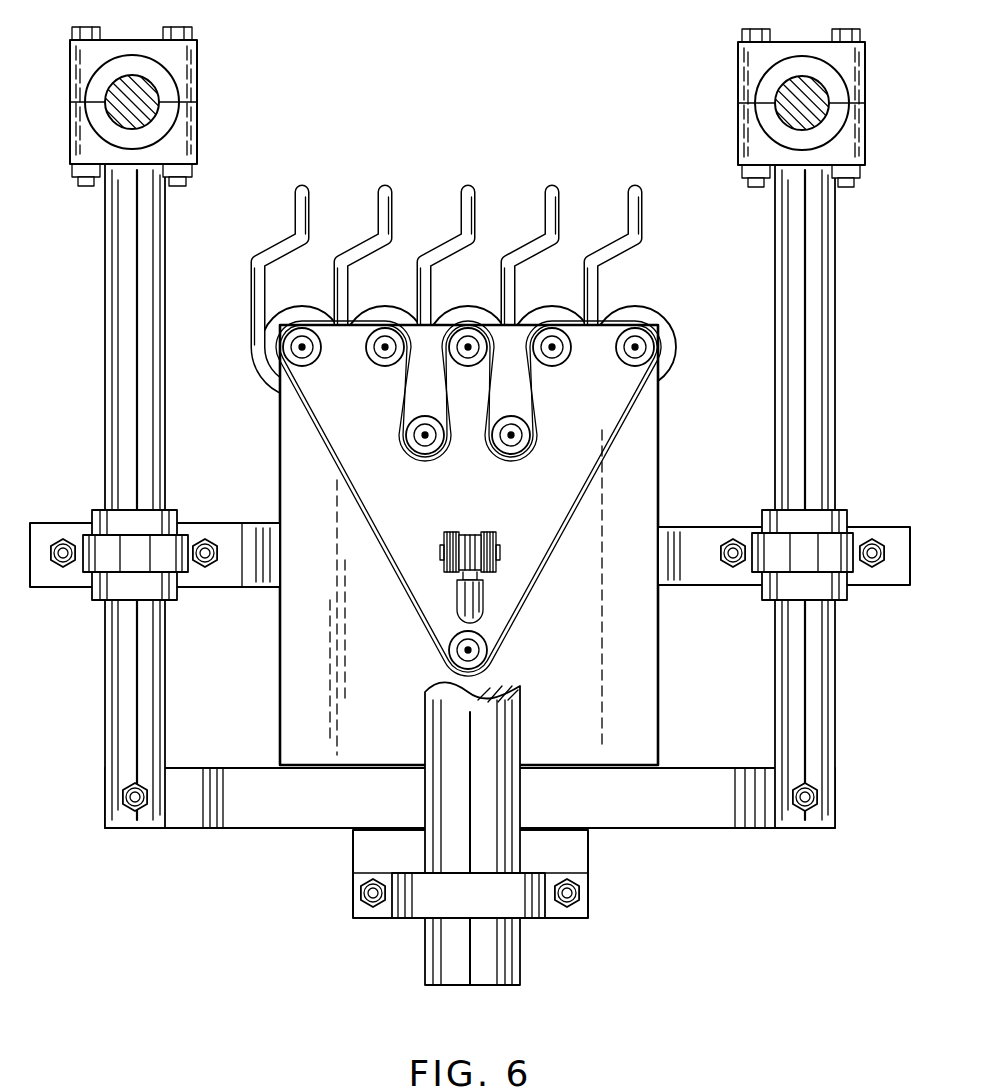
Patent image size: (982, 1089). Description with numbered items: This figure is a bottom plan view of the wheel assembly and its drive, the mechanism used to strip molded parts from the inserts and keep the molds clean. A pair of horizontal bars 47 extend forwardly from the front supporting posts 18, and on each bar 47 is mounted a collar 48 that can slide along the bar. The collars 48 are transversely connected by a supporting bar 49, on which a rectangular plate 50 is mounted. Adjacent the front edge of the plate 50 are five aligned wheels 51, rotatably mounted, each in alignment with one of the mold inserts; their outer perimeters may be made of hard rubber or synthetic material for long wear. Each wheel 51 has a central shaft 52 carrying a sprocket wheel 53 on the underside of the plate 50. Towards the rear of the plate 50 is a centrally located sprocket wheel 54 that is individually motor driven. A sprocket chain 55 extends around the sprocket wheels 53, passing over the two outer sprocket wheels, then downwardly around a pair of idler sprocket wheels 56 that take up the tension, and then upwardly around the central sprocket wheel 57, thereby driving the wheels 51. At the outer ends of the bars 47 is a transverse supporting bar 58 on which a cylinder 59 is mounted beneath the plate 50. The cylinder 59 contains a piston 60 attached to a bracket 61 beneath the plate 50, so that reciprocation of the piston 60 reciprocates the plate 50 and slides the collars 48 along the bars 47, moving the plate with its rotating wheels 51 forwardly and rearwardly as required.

The post 18 is at (150, 100).
The horizontal bar 47 is at (145, 292).
The collar 48 is at (838, 598).
The supporting bar 49 is at (247, 578).
The rectangular plate 50 is at (659, 693).
The wheel 51 is at (300, 305).
The central shaft 52 is at (633, 358).
The sprocket wheel 53 is at (552, 366).
The sprocket wheel 54 is at (478, 652).
The sprocket chain 55 is at (530, 578).
The idler sprocket wheel 56 is at (422, 446).
The central sprocket wheel 57 is at (465, 366).
The transverse supporting bar 58 is at (657, 826).
The cylinder 59 is at (437, 945).
The piston 60 is at (467, 598).
The bracket 61 is at (495, 545).